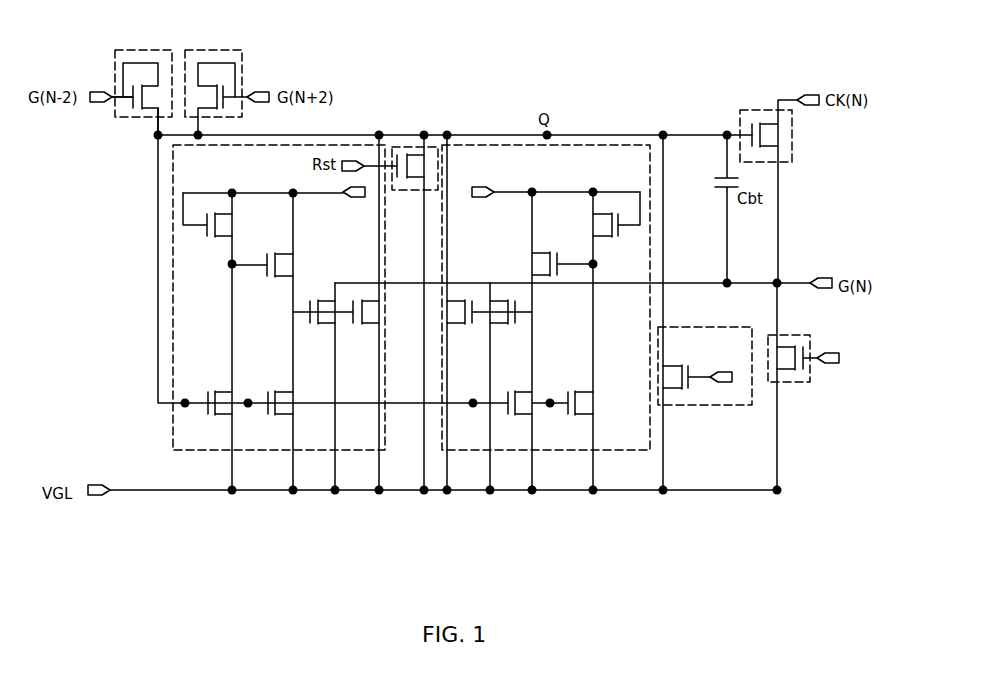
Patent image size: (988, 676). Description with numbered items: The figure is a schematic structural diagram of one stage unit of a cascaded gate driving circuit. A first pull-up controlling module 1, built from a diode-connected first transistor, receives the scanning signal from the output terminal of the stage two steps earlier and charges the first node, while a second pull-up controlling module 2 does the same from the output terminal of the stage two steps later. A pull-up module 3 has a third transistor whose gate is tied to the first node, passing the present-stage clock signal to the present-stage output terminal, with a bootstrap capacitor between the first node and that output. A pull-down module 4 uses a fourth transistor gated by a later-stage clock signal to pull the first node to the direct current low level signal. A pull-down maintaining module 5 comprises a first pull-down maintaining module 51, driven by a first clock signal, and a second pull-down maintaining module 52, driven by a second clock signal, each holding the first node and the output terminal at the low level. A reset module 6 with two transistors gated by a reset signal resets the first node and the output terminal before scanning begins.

The first pull-up controlling module 1 is at (140, 50).
The second pull-up controlling module 2 is at (215, 50).
The pull-up module 3 is at (752, 110).
The pull-down module 4 is at (752, 397).
The pull-down maintaining module 5 is at (392, 370).
The first pull-down maintaining module 51 is at (172, 285).
The second pull-down maintaining module 52 is at (612, 452).
The reset module 6 is at (398, 147).